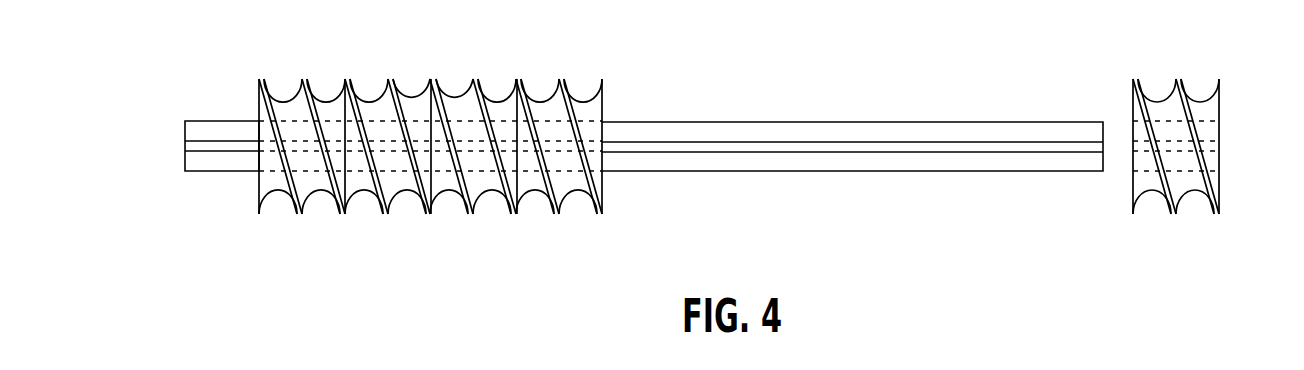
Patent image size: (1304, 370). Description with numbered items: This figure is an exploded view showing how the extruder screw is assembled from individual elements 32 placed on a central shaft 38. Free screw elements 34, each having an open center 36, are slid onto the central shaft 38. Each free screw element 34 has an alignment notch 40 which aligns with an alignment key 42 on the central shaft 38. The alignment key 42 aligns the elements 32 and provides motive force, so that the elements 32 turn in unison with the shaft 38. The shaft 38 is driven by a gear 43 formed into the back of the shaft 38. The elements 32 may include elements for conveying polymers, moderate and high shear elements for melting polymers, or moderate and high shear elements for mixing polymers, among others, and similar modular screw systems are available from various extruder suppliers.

The individual elements 32 is at (388, 79).
The free screw element 34 is at (1175, 80).
The open center 36 is at (1186, 140).
The central shaft 38 is at (852, 163).
The alignment notch 40 is at (1220, 148).
The alignment key 42 is at (747, 152).
The gear 43 is at (224, 160).